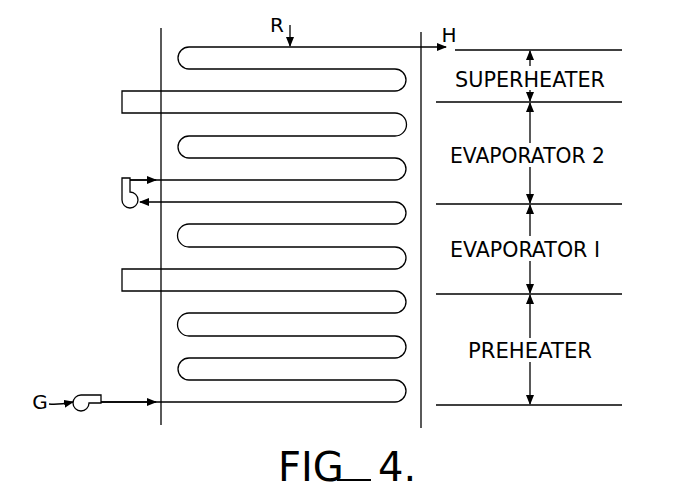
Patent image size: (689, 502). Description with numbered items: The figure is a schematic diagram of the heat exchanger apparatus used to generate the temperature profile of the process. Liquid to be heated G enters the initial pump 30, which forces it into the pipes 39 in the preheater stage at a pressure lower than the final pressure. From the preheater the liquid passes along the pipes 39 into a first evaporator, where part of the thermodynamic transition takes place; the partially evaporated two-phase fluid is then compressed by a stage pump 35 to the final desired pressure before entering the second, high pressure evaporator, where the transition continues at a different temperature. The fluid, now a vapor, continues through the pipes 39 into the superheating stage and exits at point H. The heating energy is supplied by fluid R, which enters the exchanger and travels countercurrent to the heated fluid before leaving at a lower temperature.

The initial pump 30 is at (83, 392).
The recirculation pump 35 is at (119, 193).
The pipes 39 is at (267, 406).